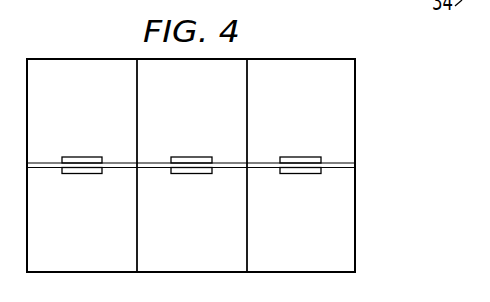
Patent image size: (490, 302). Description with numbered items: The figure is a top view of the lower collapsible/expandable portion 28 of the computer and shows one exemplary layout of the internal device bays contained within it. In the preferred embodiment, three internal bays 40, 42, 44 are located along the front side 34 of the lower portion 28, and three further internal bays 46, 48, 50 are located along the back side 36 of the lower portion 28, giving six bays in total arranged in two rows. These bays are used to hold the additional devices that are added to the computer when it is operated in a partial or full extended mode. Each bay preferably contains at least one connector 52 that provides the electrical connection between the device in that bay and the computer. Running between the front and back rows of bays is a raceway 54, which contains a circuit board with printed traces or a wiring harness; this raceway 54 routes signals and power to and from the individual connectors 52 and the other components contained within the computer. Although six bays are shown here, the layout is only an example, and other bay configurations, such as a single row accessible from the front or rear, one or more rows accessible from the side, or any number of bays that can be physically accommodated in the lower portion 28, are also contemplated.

The lower collapsible/expandable portion 28 is at (100, 58).
The front side 34 is at (355, 273).
The back side 36 is at (355, 62).
The internal bay 40 is at (94, 253).
The internal bay 42 is at (204, 253).
The internal bay 44 is at (312, 253).
The internal bay 46 is at (94, 98).
The internal bay 48 is at (204, 98).
The internal bay 50 is at (312, 98).
The connector 52 is at (78, 156).
The raceway 54 is at (333, 164).